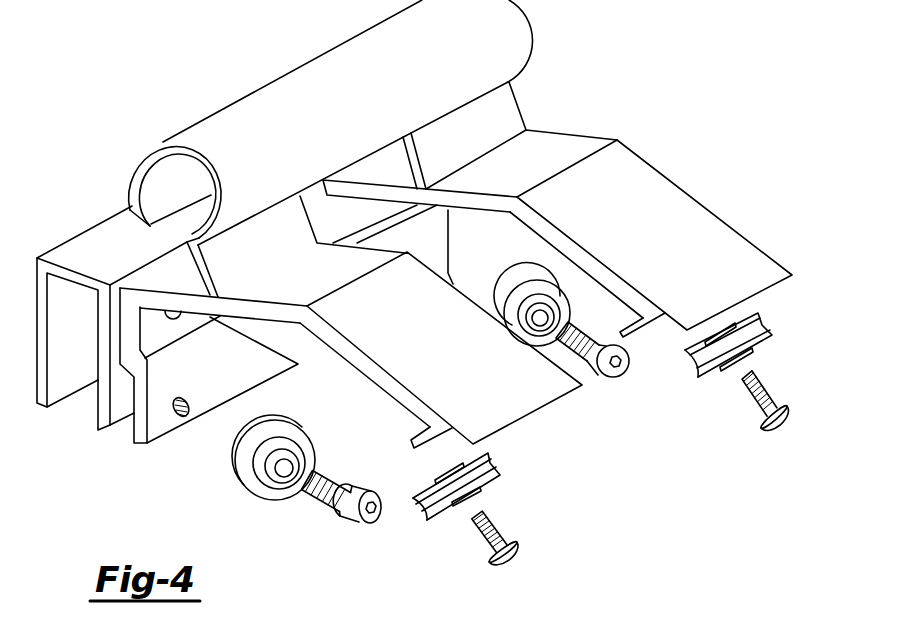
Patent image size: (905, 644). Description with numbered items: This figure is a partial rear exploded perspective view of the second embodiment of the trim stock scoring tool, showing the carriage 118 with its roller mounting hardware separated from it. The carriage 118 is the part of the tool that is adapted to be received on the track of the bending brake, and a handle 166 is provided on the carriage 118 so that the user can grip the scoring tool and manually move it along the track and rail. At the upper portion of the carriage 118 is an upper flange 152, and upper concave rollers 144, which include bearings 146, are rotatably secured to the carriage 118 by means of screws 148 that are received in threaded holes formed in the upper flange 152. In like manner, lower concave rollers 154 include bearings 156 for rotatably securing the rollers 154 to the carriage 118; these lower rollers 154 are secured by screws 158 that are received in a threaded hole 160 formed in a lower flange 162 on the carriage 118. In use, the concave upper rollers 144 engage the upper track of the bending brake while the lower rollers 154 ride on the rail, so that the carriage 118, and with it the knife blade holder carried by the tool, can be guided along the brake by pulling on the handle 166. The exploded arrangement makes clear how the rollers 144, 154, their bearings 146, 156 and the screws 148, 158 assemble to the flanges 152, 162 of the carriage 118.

The carriage 118 is at (613, 197).
The upper concave rollers 144 is at (760, 322).
The bearings 146 is at (748, 356).
The screws 148 is at (783, 423).
The upper flange 152 is at (630, 328).
The lower concave rollers 154 is at (502, 283).
The bearings 156 is at (548, 312).
The screws 158 is at (603, 376).
The threaded hole 160 is at (178, 414).
The lower flange 162 is at (157, 408).
The handle 166 is at (258, 103).